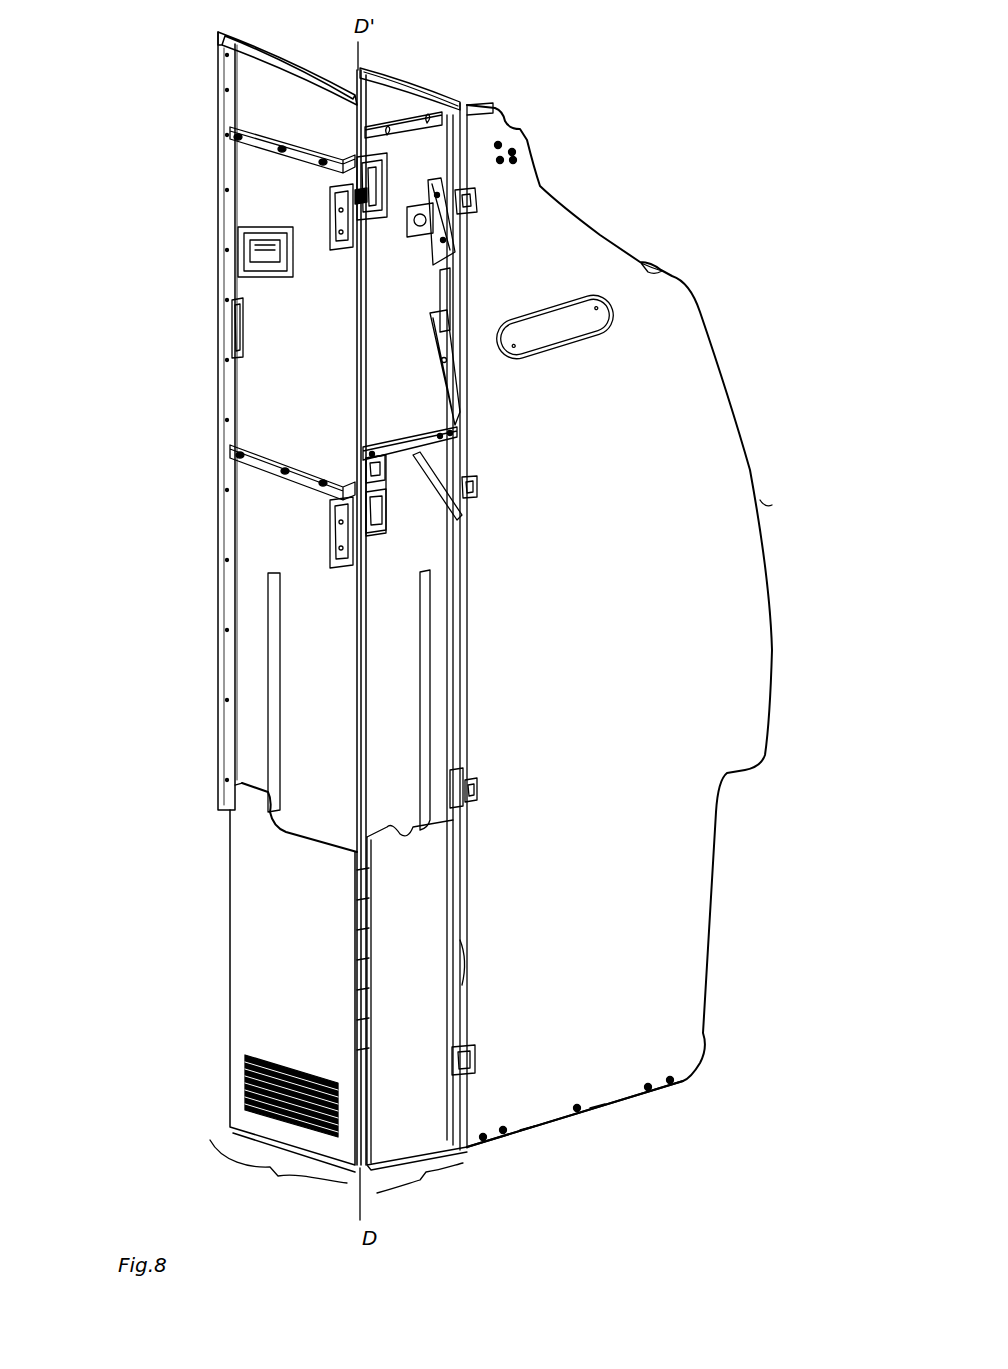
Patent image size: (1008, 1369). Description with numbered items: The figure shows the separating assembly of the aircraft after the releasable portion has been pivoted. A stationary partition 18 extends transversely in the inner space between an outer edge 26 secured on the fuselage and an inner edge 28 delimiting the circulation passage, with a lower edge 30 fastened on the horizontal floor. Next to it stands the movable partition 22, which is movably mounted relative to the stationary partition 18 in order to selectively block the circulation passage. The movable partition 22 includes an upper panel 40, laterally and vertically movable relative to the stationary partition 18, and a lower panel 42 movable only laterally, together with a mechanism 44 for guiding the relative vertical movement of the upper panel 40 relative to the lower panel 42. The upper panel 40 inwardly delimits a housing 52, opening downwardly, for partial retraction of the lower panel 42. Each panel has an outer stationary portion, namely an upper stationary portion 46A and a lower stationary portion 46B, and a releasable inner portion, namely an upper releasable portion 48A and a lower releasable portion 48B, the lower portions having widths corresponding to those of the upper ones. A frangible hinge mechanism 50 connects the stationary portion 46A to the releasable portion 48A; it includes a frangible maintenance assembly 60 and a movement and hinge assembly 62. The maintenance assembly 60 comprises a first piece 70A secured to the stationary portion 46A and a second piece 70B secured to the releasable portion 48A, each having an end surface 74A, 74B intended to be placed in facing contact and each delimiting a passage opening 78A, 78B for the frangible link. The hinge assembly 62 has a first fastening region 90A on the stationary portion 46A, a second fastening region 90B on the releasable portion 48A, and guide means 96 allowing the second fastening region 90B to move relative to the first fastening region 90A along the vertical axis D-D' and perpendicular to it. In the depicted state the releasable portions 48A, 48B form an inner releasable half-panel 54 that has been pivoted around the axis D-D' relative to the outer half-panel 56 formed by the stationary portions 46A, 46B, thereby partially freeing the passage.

The stationary partition 18 is at (750, 395).
The movable partition 22 is at (202, 602).
The outer edge 26 is at (763, 506).
The inner edge 28 is at (473, 957).
The lower edge 30 is at (620, 1107).
The upper panel 40 is at (226, 442).
The lower panel 42 is at (235, 991).
The mechanism for guiding the relative vertical movement 44 is at (433, 690).
The upper stationary portion 46A is at (402, 338).
The lower stationary portion 46B is at (432, 875).
The upper releasable portion 48A is at (238, 448).
The lower releasable portion 48B is at (268, 915).
The frangible hinge mechanism 50 is at (489, 189).
The housing 52 is at (307, 827).
The releasable half-panel 54 is at (278, 1170).
The outer half-panel 56 is at (420, 1188).
The frangible maintenance assembly 60 is at (226, 421).
The movement and hinge assembly 62 is at (300, 190).
The first piece 70A is at (420, 110).
The second piece 70B is at (270, 125).
The end surface of the first piece 74A is at (366, 458).
The end surface of the second piece 74B is at (340, 482).
The passage opening of the first piece 78A is at (378, 480).
The passage opening of the second piece 78B is at (375, 522).
The first fastening region 90A is at (388, 520).
The second fastening region 90B is at (343, 227).
The guide means 96 is at (365, 225).